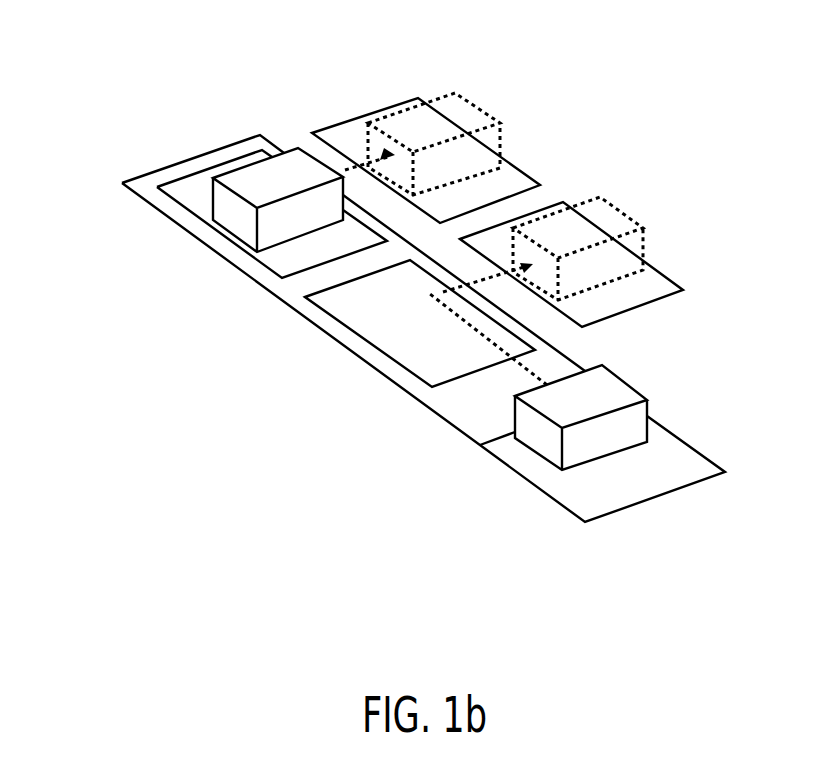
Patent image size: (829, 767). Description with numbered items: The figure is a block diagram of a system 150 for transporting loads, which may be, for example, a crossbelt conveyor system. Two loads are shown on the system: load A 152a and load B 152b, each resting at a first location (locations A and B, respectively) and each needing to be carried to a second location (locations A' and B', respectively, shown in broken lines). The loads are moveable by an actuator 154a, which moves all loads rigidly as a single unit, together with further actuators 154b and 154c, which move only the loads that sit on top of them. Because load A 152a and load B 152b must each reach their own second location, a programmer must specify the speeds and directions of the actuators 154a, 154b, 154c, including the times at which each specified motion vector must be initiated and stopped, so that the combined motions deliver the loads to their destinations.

The system 150 is at (141, 68).
The load A 152a is at (237, 193).
The load B 152b is at (515, 414).
The actuator 154a is at (147, 174).
The actuator 154b is at (355, 116).
The actuator 154c is at (411, 376).